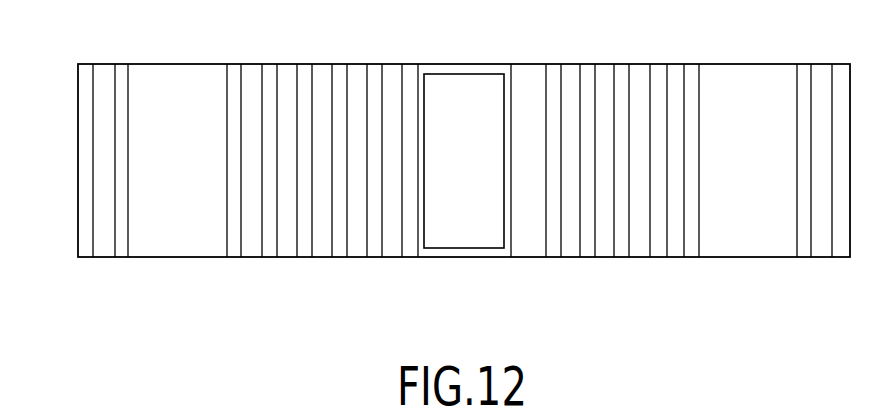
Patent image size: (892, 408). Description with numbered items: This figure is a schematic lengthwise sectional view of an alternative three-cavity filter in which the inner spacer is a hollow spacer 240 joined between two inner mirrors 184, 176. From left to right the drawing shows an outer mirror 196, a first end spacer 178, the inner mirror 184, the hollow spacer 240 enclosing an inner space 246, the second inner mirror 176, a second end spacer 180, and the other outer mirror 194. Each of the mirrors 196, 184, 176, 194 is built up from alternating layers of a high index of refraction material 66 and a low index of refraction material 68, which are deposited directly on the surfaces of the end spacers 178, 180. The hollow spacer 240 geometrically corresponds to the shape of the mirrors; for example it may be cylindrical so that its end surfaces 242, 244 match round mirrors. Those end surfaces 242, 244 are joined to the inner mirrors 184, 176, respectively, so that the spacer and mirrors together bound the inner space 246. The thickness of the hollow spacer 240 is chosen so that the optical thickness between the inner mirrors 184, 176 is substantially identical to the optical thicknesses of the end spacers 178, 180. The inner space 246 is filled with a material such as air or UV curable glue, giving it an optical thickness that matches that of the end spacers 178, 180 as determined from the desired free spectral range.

The high index of refraction material 66 is at (88, 63).
The low index of refraction material 68 is at (282, 63).
The end spacer 178 is at (199, 165).
The end spacer 180 is at (767, 165).
The inner mirror 184 is at (415, 270).
The inner mirror 176 is at (700, 270).
The mirror 196 is at (132, 270).
The mirror 194 is at (852, 270).
The hollow spacer 240 is at (449, 80).
The end surface of the hollow spacer 242 is at (418, 97).
The end surface of the hollow spacer 244 is at (513, 97).
The inner space 246 is at (482, 189).